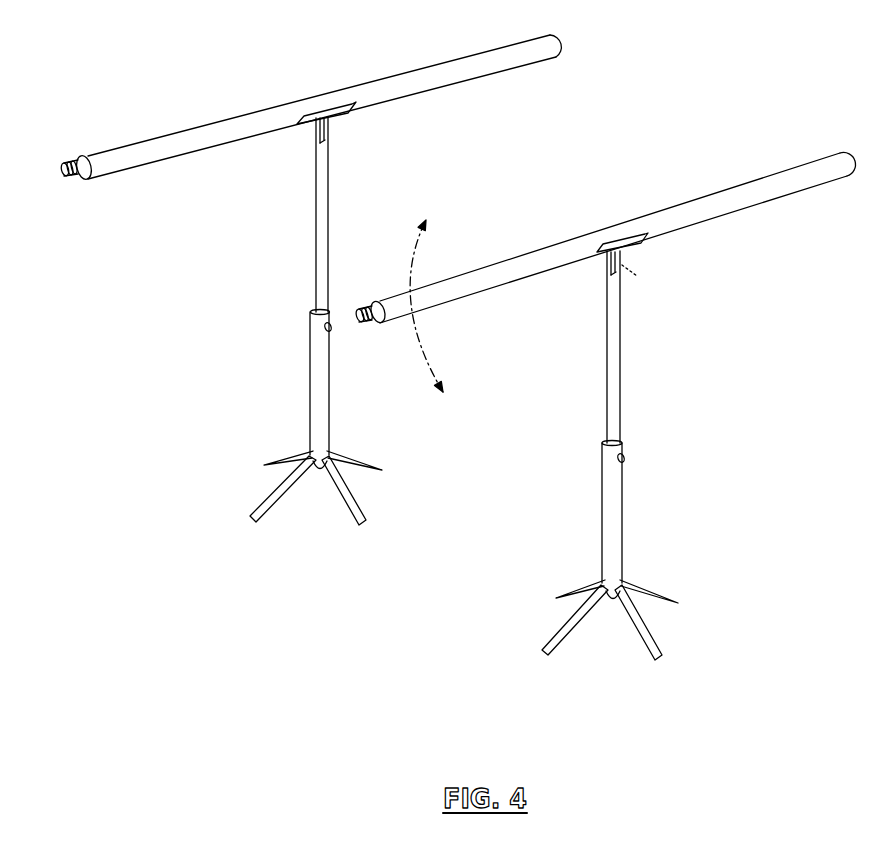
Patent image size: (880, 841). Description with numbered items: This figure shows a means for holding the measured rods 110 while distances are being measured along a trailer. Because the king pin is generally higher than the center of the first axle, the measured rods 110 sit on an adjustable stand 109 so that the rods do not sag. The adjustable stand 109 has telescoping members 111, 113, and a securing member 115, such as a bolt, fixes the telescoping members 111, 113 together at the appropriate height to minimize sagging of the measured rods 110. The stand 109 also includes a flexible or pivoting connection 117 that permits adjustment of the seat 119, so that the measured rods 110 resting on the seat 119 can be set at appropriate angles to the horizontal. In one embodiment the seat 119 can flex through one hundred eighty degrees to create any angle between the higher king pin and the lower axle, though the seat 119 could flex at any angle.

The adjustable stand 109 is at (605, 403).
The measured rods 110 is at (324, 103).
The telescoping member 111 is at (608, 498).
The telescoping member 113 is at (617, 371).
The securing member 115 is at (625, 459).
The flexible or pivoting connection 117 is at (632, 259).
The seat 119 is at (645, 242).